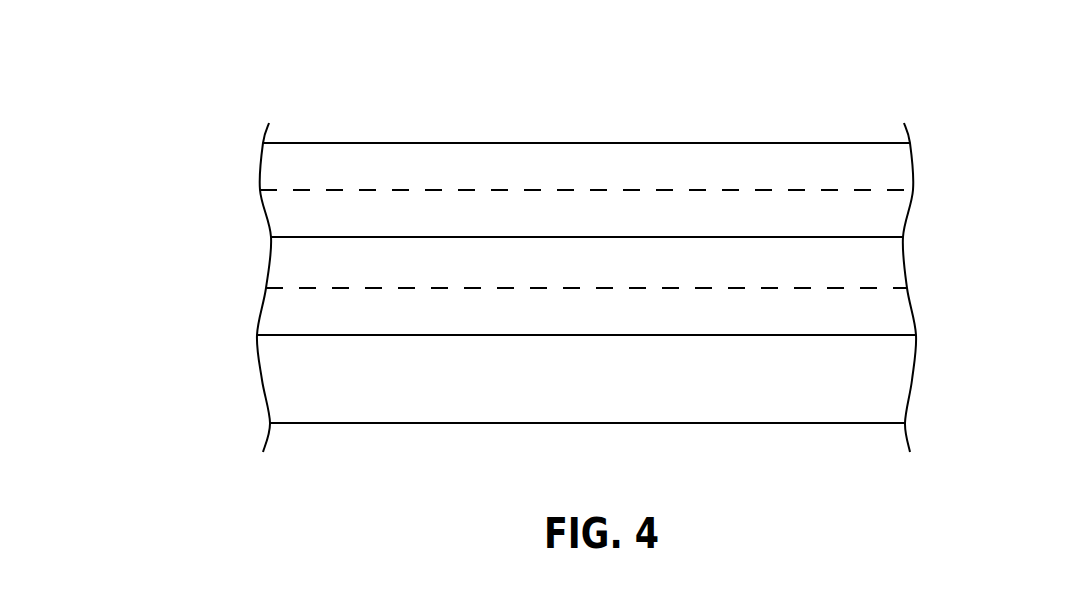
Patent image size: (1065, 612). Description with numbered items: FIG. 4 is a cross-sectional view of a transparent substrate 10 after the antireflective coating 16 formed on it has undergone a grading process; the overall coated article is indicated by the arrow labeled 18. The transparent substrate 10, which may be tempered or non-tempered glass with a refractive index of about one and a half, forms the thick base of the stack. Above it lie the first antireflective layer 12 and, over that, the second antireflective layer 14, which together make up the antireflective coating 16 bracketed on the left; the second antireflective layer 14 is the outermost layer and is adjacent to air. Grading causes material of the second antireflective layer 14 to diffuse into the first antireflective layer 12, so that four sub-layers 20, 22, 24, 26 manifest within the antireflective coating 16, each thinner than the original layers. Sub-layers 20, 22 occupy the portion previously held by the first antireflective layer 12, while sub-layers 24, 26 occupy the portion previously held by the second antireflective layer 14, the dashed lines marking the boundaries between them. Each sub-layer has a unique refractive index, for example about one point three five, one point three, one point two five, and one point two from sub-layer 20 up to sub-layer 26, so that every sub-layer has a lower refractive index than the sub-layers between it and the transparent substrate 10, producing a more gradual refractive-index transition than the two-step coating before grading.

The transparent substrate 10 is at (893, 368).
The first antireflective layer 12 is at (932, 238).
The second antireflective layer 14 is at (932, 144).
The antireflective coating 16 is at (100, 144).
The coated article 18 is at (357, 78).
The sub-layer 20 is at (245, 289).
The sub-layer 22 is at (245, 238).
The sub-layer 24 is at (245, 191).
The sub-layer 26 is at (245, 144).